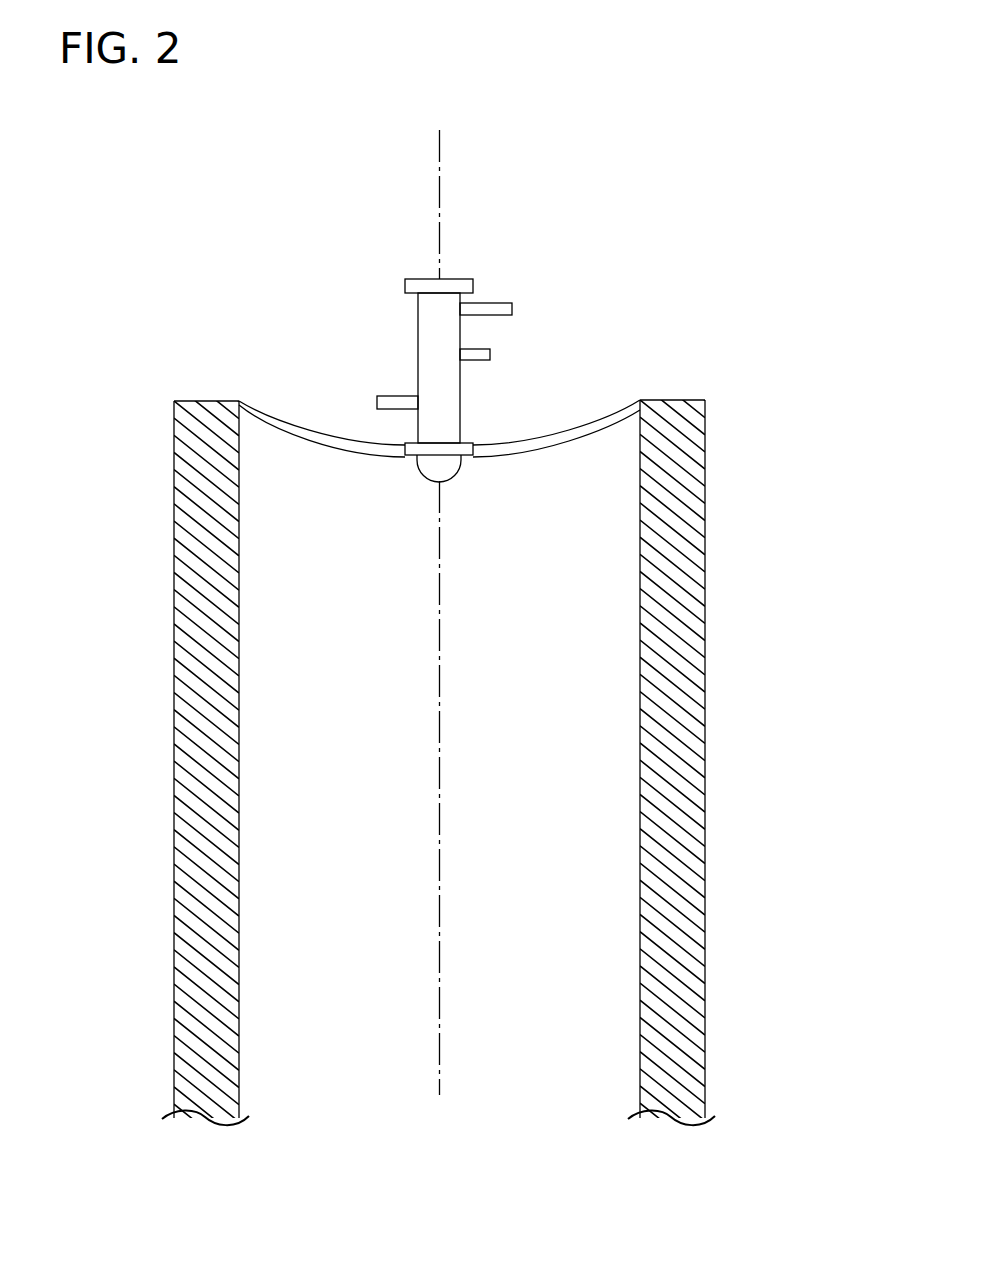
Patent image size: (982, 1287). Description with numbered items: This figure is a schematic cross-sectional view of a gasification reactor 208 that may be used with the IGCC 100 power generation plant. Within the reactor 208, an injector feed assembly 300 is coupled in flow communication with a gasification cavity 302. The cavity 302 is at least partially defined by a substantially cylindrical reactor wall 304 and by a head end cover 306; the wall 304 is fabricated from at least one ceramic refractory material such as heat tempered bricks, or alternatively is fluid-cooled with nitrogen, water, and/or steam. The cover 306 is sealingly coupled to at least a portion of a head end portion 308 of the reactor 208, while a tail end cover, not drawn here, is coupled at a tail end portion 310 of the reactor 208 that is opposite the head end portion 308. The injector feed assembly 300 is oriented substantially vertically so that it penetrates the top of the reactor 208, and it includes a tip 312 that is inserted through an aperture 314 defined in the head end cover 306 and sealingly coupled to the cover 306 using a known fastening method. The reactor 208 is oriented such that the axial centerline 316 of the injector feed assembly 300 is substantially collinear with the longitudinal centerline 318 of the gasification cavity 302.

The IGCC power generation plant 100 is at (172, 190).
The gasification reactor 208 is at (645, 268).
The injector feed assembly 300 is at (418, 341).
The gasification cavity 302 is at (564, 830).
The reactor wall 304 is at (206, 733).
The head end cover 306 is at (512, 445).
The head end portion 308 is at (636, 386).
The tail end portion 310 is at (486, 1072).
The tip 312 is at (422, 466).
The aperture 314 is at (466, 460).
The axial centerline 316 is at (441, 153).
The longitudinal centerline 318 is at (439, 877).